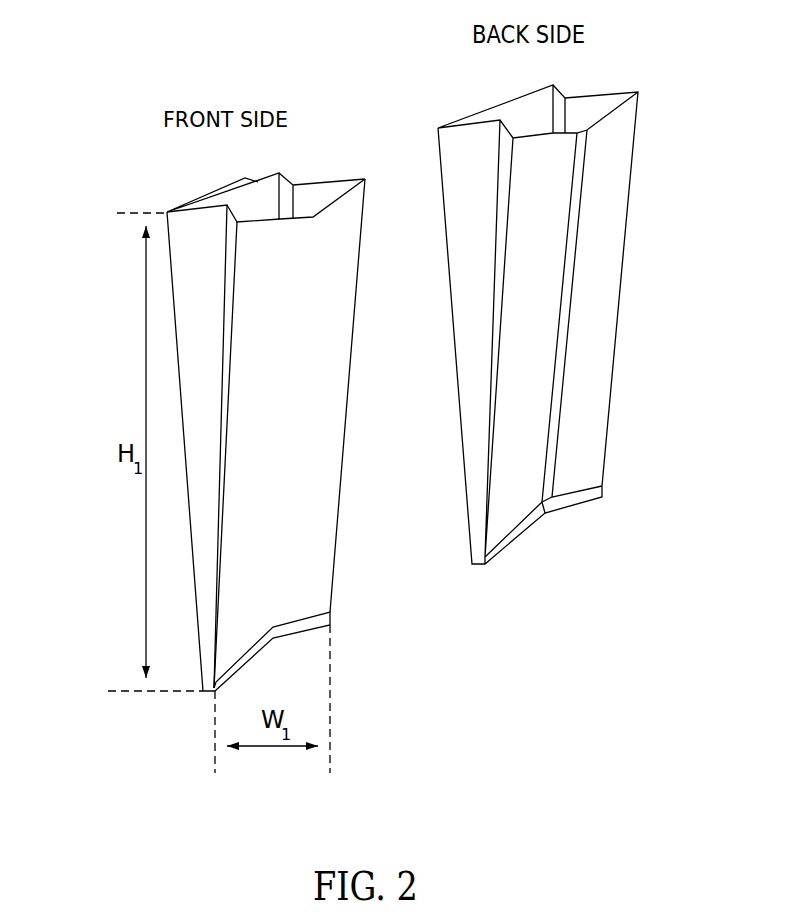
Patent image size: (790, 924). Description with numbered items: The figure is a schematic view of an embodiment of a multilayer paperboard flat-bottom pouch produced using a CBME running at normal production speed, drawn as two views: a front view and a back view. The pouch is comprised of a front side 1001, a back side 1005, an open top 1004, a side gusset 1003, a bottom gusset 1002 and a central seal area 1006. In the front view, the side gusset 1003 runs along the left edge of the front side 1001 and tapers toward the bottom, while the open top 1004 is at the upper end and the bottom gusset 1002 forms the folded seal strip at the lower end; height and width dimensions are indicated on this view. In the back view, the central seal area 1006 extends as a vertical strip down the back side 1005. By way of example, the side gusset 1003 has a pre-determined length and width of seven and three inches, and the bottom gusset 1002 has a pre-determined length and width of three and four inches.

The front side 1001 is at (312, 390).
The bottom gusset 1002 is at (287, 630).
The side gusset 1003 is at (202, 400).
The open top 1004 is at (260, 208).
The back side 1005 is at (598, 197).
The central seal area 1006 is at (567, 275).